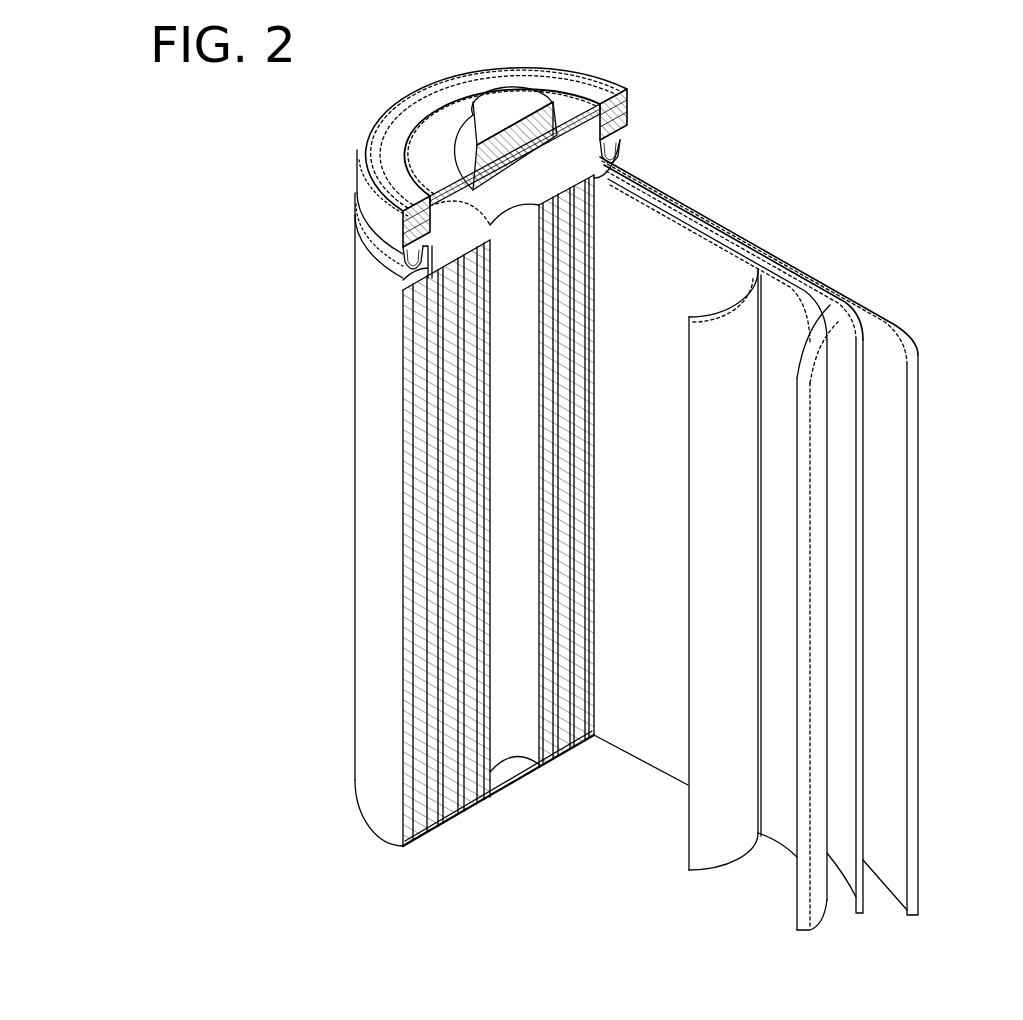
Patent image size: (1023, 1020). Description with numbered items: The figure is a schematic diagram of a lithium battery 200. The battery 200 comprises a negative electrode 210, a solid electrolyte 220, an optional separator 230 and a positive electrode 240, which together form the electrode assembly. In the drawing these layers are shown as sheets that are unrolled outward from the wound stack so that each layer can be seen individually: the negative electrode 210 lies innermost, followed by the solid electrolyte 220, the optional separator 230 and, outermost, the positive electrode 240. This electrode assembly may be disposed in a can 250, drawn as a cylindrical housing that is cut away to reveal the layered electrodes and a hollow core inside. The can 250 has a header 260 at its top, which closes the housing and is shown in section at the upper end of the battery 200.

The battery 200 is at (852, 60).
The negative electrode 210 is at (700, 232).
The solid electrolyte 220 is at (783, 293).
The separator 230 is at (848, 313).
The positive electrode 240 is at (903, 347).
The can 250 is at (368, 498).
The header 260 is at (487, 108).